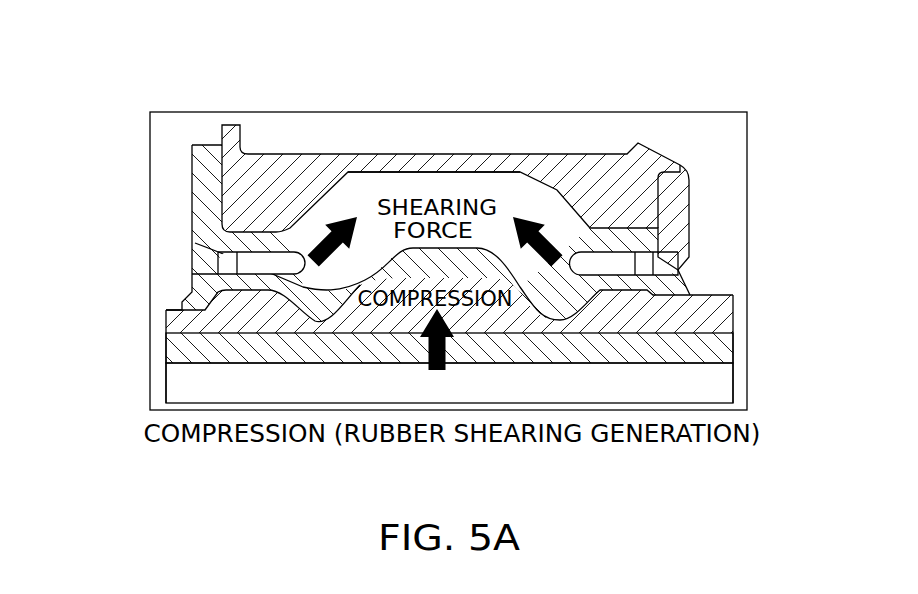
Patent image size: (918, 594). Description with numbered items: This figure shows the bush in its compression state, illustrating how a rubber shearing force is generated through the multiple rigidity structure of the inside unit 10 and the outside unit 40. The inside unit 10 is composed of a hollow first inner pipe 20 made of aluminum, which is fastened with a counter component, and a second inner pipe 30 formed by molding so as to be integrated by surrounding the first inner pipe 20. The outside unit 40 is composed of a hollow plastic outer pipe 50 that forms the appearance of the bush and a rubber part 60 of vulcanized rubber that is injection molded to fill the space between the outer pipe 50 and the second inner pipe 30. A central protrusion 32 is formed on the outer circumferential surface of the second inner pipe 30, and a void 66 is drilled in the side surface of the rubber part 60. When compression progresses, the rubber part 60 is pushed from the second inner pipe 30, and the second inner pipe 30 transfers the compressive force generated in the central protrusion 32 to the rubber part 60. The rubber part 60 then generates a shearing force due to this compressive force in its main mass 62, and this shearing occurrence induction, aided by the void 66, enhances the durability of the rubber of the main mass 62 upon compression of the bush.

The inside unit 10 is at (385, 356).
The first inner pipe 20 is at (205, 384).
The second inner pipe 30 is at (186, 321).
The central protrusion 32 is at (220, 254).
The outside unit 40 is at (423, 230).
The outer pipe 50 is at (228, 133).
The rubber part 60 is at (207, 188).
The main mass 62 is at (428, 183).
The void 66 is at (610, 263).